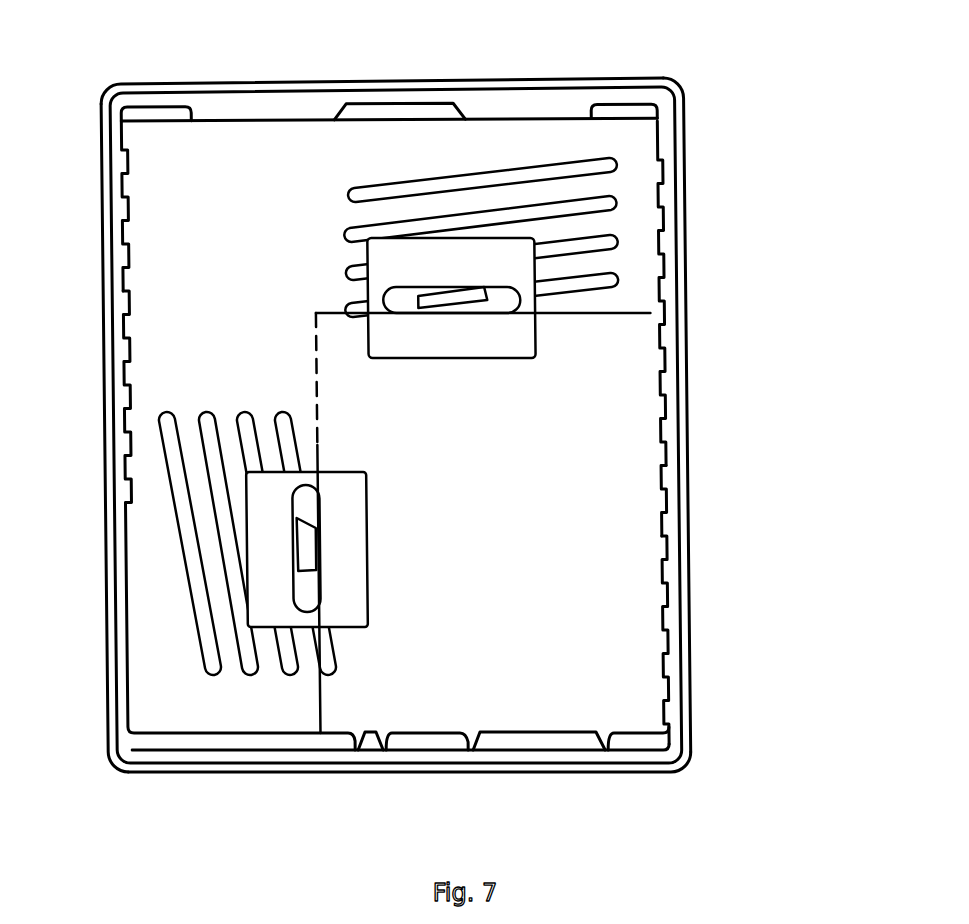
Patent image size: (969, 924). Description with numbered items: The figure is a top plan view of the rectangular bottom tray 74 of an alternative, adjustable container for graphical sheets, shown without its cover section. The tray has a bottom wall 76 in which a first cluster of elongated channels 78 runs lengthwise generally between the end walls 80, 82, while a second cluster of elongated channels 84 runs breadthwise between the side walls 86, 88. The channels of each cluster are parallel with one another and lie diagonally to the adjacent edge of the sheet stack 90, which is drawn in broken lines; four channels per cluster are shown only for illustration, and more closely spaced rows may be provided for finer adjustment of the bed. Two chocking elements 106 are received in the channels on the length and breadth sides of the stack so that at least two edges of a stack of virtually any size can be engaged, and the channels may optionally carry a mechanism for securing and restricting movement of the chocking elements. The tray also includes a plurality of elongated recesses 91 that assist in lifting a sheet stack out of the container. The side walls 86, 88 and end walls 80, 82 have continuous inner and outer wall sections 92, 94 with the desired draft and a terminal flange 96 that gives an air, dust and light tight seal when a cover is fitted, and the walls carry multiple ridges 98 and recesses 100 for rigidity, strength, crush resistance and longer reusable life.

The bottom tray 74 is at (441, 429).
The bottom wall 76 is at (188, 572).
The first cluster of elongated channels 78 is at (175, 513).
The end wall 80 is at (303, 72).
The end wall 82 is at (258, 784).
The second cluster of elongated channels 84 is at (478, 173).
The side wall 86 is at (94, 248).
The side wall 88 is at (704, 410).
The sheet stack 90 is at (308, 320).
The elongated recesses 91 is at (390, 108).
The inner wall section 92 is at (653, 490).
The outer wall section 94 is at (684, 543).
The terminal flange 96 is at (414, 429).
The ridges 98 is at (127, 237).
The recesses 100 is at (126, 352).
The chocking elements 106 is at (430, 374).